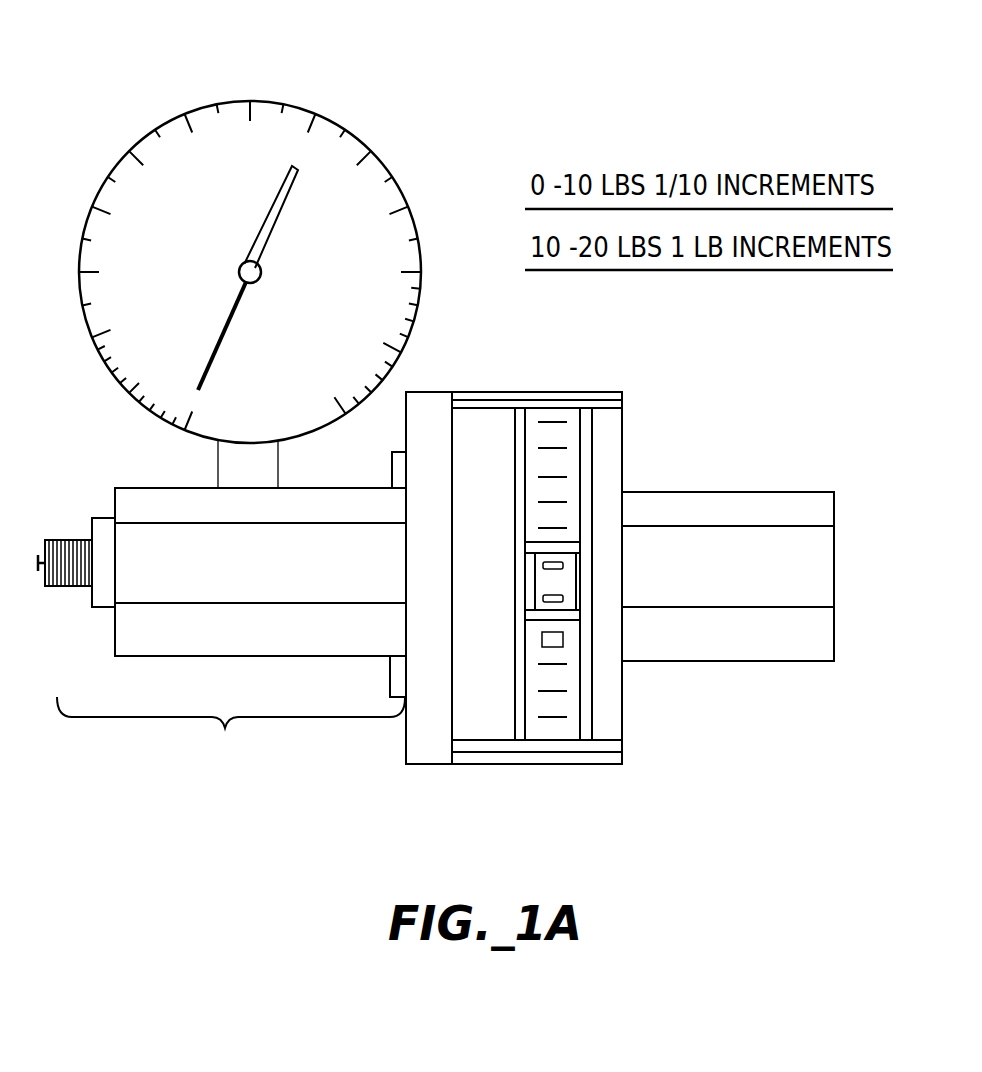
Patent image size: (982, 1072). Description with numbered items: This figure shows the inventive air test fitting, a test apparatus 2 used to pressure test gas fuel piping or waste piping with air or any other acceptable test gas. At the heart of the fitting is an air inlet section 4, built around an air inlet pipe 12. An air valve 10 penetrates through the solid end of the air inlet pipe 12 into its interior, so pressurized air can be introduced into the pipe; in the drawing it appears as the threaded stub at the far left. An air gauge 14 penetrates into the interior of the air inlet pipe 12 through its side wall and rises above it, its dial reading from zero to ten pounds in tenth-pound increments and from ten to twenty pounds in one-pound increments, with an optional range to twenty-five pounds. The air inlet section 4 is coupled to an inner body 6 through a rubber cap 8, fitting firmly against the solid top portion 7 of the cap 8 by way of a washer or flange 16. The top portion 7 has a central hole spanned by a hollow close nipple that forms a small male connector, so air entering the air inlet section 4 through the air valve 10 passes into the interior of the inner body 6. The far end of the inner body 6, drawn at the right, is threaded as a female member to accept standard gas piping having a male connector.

The test apparatus 2 is at (722, 845).
The air inlet section 4 is at (231, 733).
The inner body 6 is at (635, 672).
The top portion 7 is at (421, 563).
The rubber cap 8 is at (622, 768).
The air valve 10 is at (75, 538).
The air inlet pipe 12 is at (277, 573).
The air gauge 14 is at (312, 112).
The flange 16 is at (392, 470).